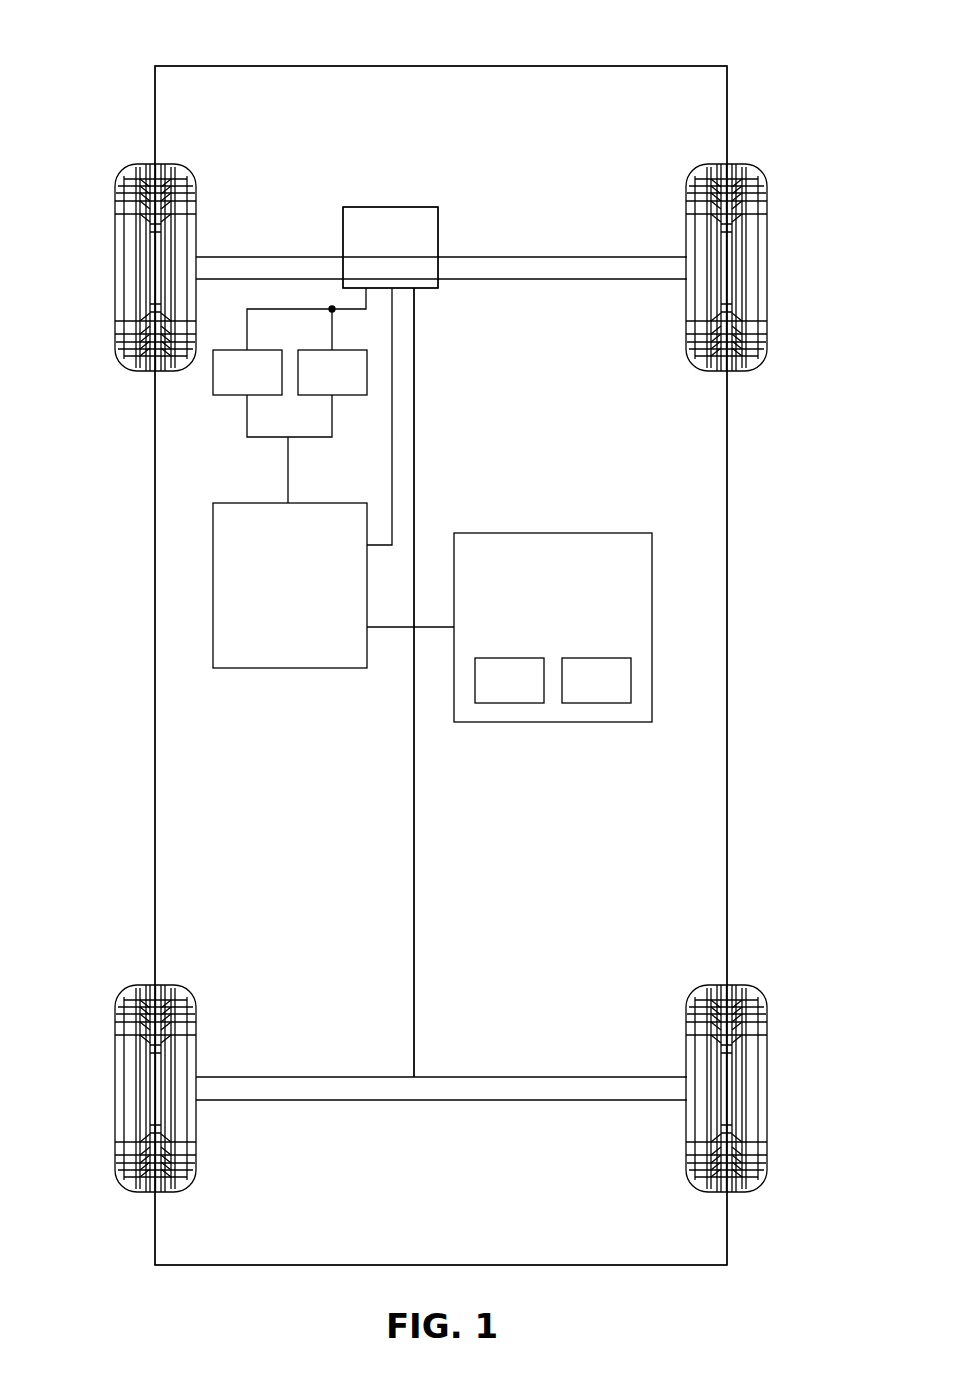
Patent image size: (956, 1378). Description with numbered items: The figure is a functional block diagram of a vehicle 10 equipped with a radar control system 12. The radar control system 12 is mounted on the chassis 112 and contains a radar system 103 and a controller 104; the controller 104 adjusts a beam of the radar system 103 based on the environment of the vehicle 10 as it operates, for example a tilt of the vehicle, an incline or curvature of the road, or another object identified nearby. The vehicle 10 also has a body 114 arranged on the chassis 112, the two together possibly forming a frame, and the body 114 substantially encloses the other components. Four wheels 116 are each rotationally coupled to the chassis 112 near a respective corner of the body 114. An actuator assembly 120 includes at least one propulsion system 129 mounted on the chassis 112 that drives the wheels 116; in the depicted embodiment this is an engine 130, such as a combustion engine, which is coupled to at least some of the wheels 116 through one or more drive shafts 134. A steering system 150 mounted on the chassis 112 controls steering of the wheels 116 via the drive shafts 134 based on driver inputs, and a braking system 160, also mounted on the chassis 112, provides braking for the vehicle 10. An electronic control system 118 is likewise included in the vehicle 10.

The vehicle 10 is at (116, 37).
The radar control system 12 is at (538, 594).
The radar system 103 is at (489, 694).
The controller 104 is at (576, 694).
The chassis 112 is at (414, 882).
The body 114 is at (155, 658).
The wheels 116 is at (115, 268).
The electronic control system 118 is at (270, 596).
The actuator assembly 120 is at (425, 292).
The propulsion system 129 is at (392, 207).
The engine 130 is at (370, 245).
The drive shafts 134 is at (253, 257).
The steering system 150 is at (227, 386).
The braking system 160 is at (312, 386).